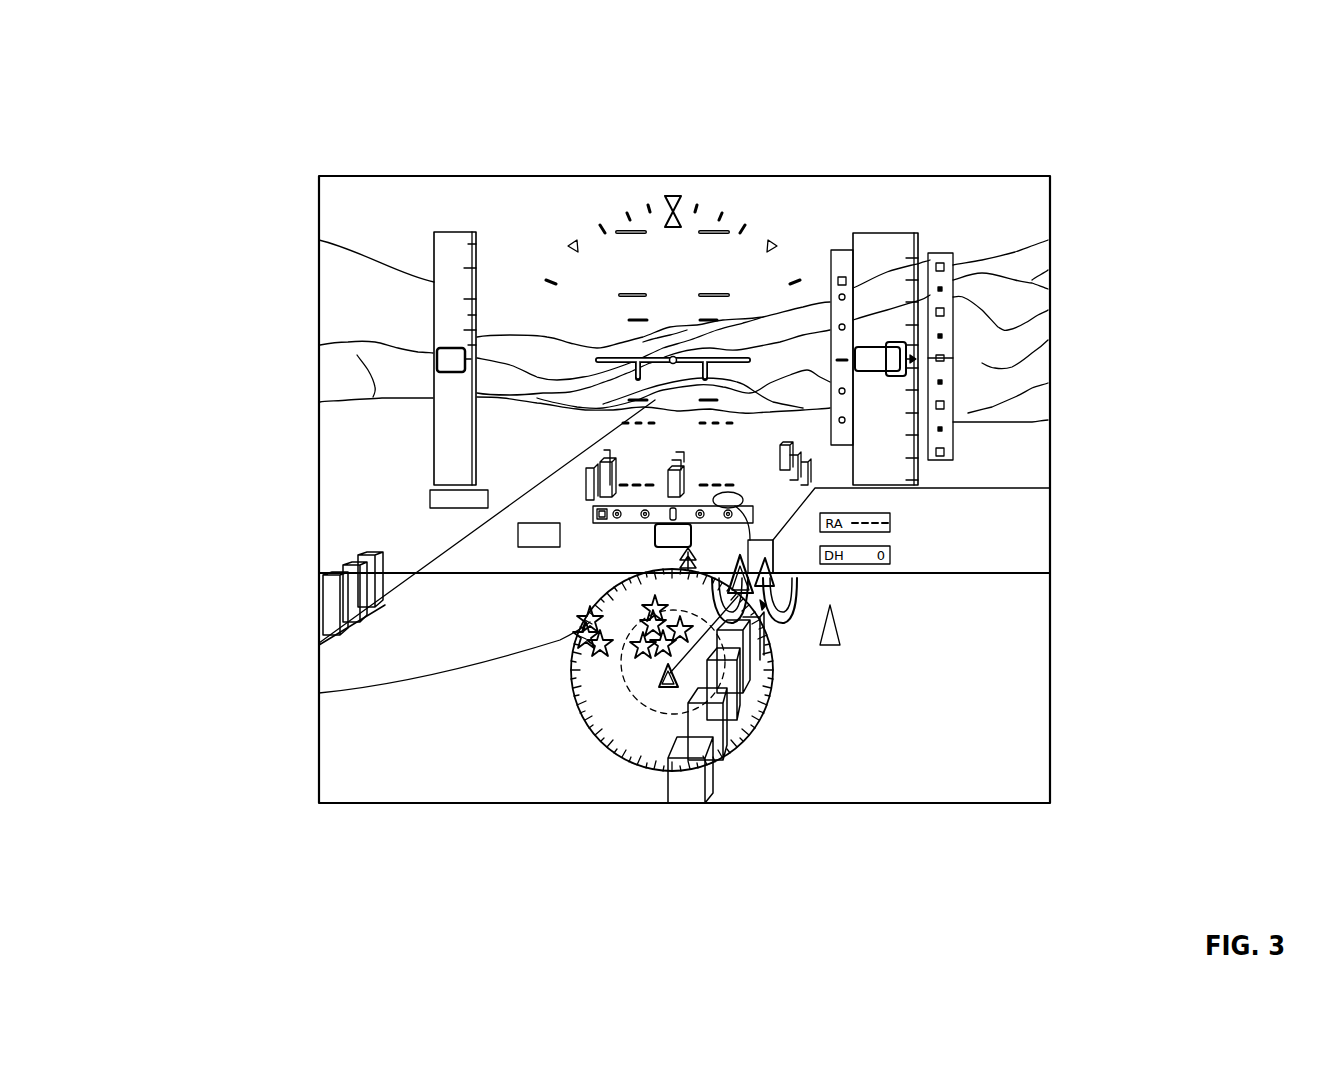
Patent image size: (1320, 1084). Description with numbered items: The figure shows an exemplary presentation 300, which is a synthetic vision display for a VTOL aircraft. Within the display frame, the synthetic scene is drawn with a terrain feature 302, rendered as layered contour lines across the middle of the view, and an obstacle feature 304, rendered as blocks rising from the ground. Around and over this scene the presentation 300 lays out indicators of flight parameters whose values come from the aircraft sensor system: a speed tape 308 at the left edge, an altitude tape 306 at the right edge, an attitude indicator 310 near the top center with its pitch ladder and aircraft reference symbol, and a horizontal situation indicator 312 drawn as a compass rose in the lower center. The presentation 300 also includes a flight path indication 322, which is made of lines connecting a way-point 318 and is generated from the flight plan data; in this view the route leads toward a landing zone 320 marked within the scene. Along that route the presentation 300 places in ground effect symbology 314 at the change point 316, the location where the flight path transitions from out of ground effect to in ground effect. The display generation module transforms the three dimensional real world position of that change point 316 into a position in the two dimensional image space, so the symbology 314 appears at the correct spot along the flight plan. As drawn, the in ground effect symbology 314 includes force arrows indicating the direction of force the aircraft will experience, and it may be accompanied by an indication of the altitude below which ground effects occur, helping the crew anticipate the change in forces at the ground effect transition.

The presentation 300 is at (303, 111).
The terrain feature 302 is at (387, 365).
The obstacle feature 304 is at (745, 780).
The altitude or vertical speed tape 306 is at (785, 405).
The speed tape 308 is at (434, 275).
The attitude indicator 310 is at (640, 294).
The horizontal situation indicator 312 is at (630, 692).
The in ground effect symbology 314 is at (787, 626).
The change point 316 is at (750, 545).
The waypoint 318 is at (662, 676).
The landing zone 320 is at (728, 492).
The flight path indication 322 is at (590, 620).